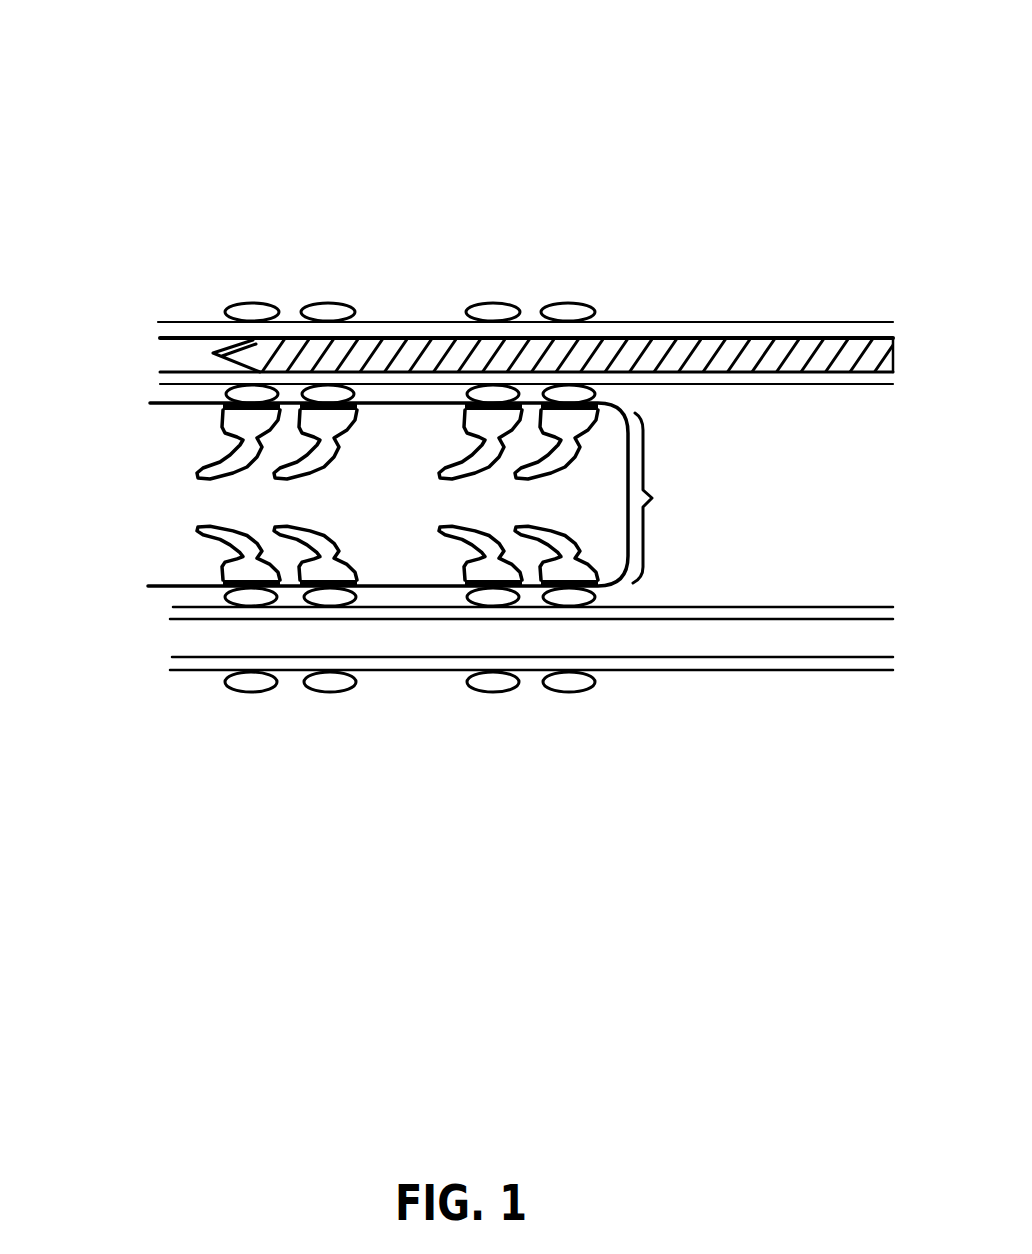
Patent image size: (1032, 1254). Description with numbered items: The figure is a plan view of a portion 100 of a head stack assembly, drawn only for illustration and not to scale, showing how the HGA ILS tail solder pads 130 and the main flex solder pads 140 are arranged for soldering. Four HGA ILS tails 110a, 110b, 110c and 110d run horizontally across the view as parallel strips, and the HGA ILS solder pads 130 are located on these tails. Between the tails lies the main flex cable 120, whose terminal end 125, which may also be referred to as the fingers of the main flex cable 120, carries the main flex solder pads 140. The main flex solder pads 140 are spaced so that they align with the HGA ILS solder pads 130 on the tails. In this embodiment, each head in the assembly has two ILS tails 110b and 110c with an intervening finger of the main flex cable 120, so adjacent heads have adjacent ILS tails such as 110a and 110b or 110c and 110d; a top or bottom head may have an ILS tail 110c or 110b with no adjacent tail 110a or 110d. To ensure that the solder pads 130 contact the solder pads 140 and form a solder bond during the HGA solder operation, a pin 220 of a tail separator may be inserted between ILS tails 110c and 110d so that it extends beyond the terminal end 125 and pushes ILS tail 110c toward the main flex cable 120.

The portion of head stack assembly 100 is at (483, 52).
The HGA ILS tail 110a is at (837, 684).
The HGA ILS tail 110b is at (836, 593).
The HGA ILS tail 110c is at (817, 396).
The HGA ILS tail 110d is at (820, 310).
The main flex cable 120 is at (617, 482).
The terminal end 125 is at (652, 498).
The HGA ILS solder pads 130 is at (474, 367).
The main flex solder pads 140 is at (220, 450).
The pin 220 is at (212, 330).